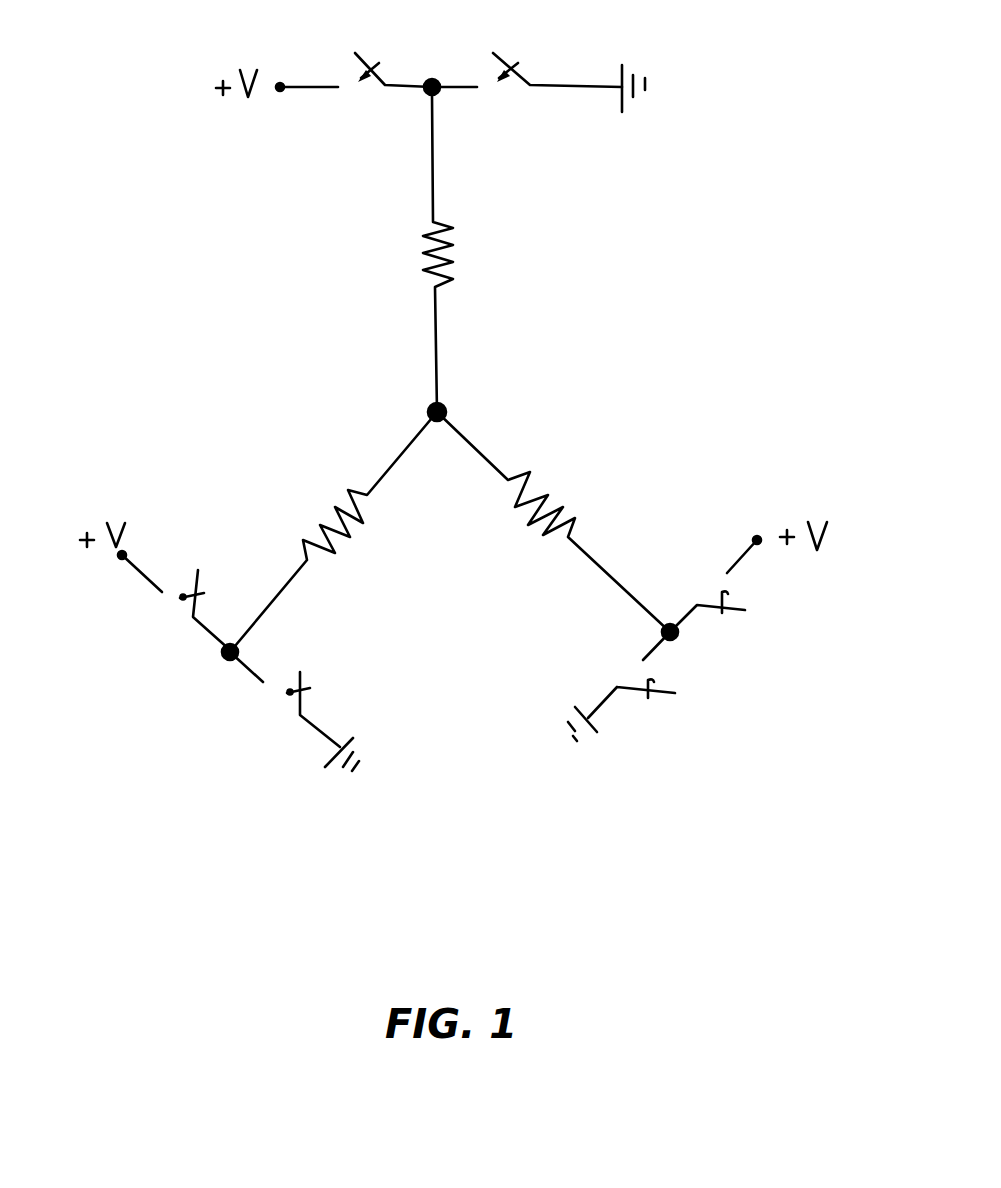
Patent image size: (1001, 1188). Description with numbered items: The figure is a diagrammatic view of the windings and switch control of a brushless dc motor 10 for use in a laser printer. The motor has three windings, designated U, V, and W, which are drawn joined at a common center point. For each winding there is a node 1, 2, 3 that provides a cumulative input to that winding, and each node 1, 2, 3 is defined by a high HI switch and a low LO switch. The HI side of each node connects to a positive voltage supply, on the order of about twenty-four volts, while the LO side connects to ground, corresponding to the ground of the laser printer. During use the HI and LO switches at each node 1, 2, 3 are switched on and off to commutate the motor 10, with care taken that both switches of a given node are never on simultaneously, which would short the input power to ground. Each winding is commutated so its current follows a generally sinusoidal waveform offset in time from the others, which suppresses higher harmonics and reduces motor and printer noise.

The node 1 is at (431, 75).
The node 2 is at (218, 662).
The node 3 is at (674, 637).
The brushless dc motor 10 is at (88, 216).